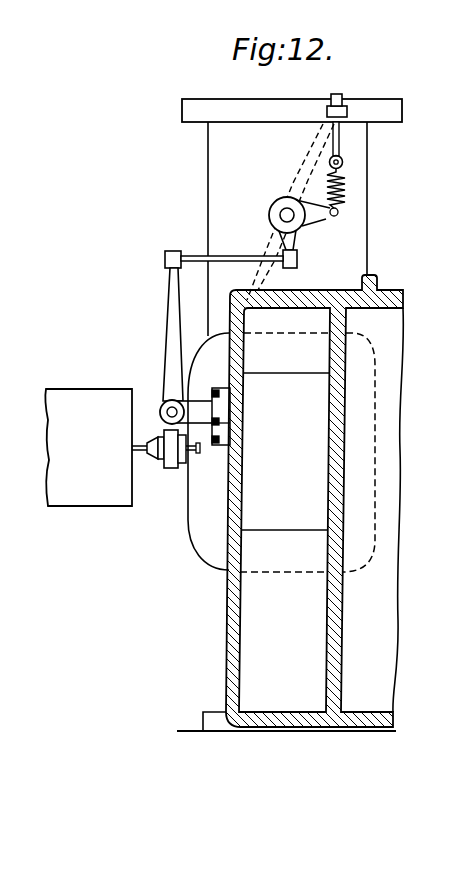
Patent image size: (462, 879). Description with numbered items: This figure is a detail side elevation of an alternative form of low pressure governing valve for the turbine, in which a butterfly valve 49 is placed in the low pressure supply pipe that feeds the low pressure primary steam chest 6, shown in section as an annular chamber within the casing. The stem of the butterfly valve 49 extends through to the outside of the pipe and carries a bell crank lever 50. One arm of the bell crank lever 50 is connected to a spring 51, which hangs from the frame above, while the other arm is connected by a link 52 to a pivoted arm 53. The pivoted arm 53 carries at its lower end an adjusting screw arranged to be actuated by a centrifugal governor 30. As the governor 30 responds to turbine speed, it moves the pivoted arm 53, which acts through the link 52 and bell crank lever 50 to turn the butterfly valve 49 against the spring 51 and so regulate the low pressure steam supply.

The low pressure primary steam chest 6 is at (258, 600).
The centrifugal governor 30 is at (70, 389).
The butterfly valve 49 is at (312, 149).
The bell crank lever 50 is at (298, 226).
The spring 51 is at (338, 186).
The link 52 is at (240, 249).
The pivoted arm 53 is at (167, 312).